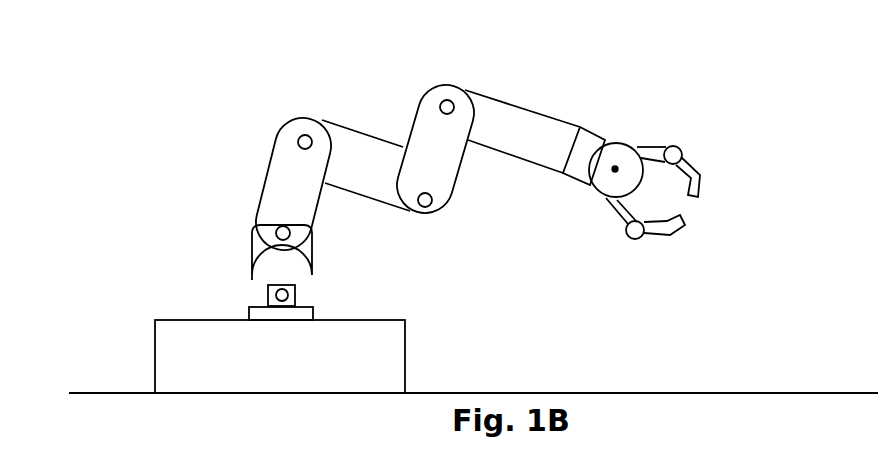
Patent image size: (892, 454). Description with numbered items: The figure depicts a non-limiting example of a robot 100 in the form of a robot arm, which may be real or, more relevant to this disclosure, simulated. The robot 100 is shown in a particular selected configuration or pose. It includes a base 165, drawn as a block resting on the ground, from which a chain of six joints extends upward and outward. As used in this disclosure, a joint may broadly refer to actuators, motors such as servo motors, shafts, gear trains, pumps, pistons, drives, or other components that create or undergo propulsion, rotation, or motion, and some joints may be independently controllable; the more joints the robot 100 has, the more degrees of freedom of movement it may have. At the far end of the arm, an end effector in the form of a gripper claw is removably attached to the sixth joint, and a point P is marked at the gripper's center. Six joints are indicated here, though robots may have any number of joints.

The robot 100 is at (124, 151).
The base 165 is at (348, 320).
The tool center point P is at (615, 165).